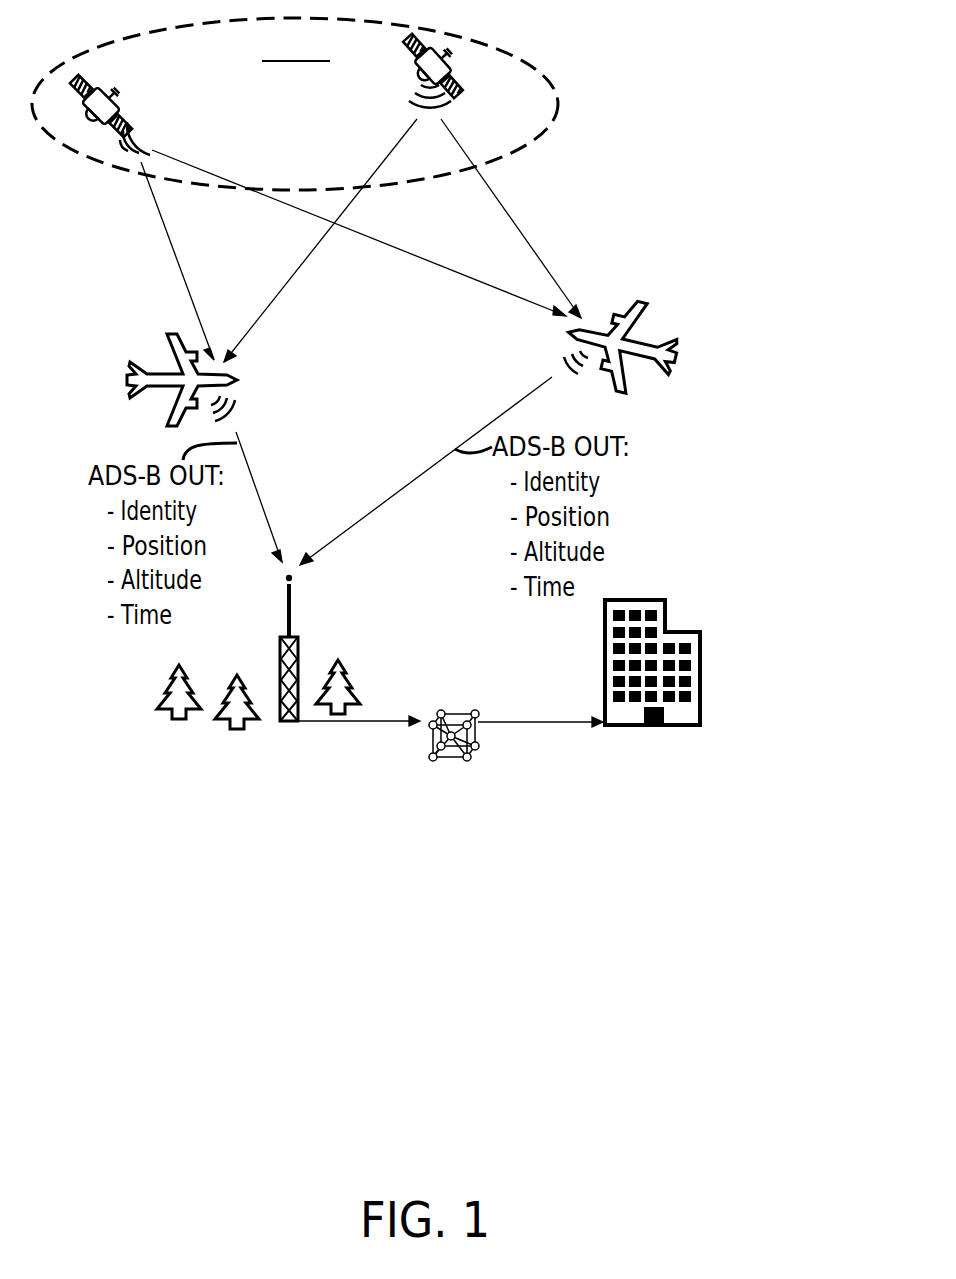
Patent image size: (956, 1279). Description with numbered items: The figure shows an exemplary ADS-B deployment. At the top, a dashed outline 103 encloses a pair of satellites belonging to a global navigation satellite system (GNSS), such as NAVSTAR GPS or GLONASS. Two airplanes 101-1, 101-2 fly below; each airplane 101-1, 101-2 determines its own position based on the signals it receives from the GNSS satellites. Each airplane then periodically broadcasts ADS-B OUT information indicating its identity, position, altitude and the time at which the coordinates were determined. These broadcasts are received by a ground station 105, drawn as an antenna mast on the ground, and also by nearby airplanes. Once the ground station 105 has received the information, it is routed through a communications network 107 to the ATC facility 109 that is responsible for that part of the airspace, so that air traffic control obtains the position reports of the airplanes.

The GNSS satellite constellation 103 is at (518, 60).
The airplane 101-1 is at (165, 375).
The airplane 101-2 is at (637, 338).
The ground station 105 is at (297, 666).
The communications network 107 is at (465, 718).
The ATC facility 109 is at (650, 600).